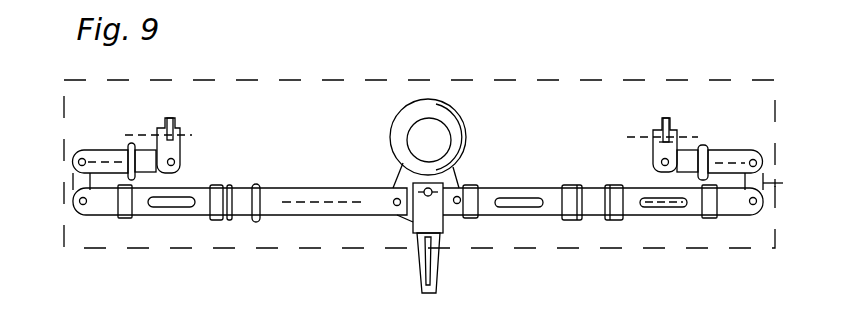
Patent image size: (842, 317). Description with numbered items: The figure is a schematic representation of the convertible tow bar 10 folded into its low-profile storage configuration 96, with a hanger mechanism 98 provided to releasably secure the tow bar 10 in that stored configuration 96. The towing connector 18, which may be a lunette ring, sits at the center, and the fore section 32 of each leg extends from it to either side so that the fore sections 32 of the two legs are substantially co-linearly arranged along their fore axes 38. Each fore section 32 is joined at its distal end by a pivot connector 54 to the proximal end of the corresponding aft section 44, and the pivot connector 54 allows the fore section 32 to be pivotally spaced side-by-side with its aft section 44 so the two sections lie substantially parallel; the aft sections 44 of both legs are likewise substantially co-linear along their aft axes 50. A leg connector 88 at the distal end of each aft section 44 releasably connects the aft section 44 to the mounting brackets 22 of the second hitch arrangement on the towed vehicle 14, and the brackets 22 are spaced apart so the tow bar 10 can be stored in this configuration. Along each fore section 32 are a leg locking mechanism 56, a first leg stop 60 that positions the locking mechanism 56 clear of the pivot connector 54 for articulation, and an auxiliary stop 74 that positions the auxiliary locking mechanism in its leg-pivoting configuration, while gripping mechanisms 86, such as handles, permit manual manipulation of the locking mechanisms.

The convertible tow bar 10 is at (442, 130).
The towed vehicle 14 is at (286, 120).
The towing connector 18 is at (468, 140).
The mounting brackets 22 is at (662, 125).
The fore section 32 is at (333, 215).
The fore axis 38 is at (298, 200).
The aft section 44 is at (713, 150).
The aft axis 50 is at (102, 165).
The pivot connector 54 is at (782, 183).
The leg locking mechanism 56 is at (172, 208).
The first leg stop 60 is at (607, 185).
The auxiliary stop 74 is at (577, 185).
The gripping mechanisms 86 is at (520, 207).
The leg connector 88 is at (678, 141).
The storage configuration 96 is at (536, 72).
The hanger mechanism 98 is at (440, 222).